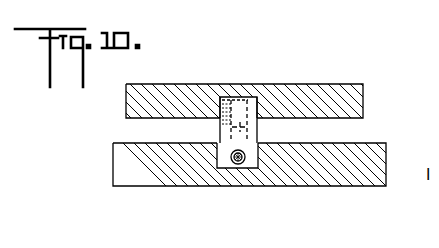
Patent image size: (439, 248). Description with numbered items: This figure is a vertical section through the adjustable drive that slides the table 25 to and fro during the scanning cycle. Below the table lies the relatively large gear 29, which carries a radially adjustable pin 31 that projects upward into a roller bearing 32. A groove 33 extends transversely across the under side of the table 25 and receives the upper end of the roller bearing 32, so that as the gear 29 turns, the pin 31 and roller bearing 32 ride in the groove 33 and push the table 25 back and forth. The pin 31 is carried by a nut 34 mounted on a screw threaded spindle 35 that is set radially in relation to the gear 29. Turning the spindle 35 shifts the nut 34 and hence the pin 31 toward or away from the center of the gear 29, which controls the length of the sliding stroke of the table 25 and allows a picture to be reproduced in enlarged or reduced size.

The table 25 is at (325, 100).
The gear 29 is at (366, 165).
The pin 31 is at (259, 127).
The roller bearing 32 is at (226, 100).
The groove 33 is at (258, 106).
The nut 34 is at (225, 160).
The screw threaded spindle 35 is at (241, 163).